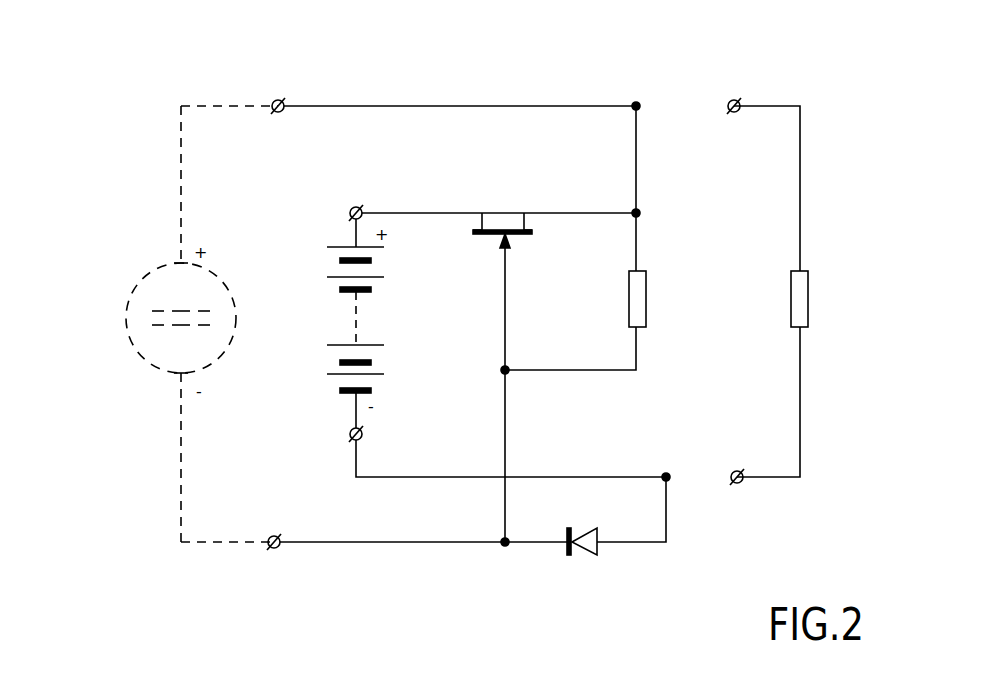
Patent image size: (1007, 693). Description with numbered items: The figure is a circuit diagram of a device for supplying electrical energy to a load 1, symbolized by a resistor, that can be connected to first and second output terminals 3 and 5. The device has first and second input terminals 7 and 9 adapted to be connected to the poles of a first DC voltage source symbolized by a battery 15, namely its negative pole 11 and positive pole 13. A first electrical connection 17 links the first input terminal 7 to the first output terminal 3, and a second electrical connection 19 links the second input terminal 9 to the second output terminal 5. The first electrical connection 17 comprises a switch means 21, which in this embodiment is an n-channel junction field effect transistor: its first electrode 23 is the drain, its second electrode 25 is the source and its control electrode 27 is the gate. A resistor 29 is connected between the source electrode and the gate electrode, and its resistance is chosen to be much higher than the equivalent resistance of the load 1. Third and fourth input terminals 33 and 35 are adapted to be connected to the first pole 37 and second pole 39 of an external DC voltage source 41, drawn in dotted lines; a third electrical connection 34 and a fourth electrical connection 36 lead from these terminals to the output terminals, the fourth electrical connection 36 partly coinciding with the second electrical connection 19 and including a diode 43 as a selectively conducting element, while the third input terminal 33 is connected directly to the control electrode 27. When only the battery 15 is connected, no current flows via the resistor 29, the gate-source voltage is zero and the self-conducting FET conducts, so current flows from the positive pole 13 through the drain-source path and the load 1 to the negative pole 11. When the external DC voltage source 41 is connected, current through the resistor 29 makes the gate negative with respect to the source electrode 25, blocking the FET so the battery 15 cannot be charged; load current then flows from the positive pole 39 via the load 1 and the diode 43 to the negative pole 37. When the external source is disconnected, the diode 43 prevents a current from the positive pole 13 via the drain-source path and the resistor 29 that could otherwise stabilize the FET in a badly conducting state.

The load 1 is at (808, 300).
The first output terminal 3 is at (735, 99).
The second output terminal 5 is at (738, 484).
The first input terminal 7 is at (349, 213).
The second input terminal 9 is at (350, 444).
The negative pole 11 is at (340, 391).
The positive pole 13 is at (327, 247).
The battery 15 is at (362, 318).
The first electrical connection 17 is at (420, 213).
The second electrical connection 19 is at (438, 477).
The switch means 21 is at (512, 199).
The first electrode 23 is at (473, 233).
The second electrode 25 is at (532, 233).
The control electrode 27 is at (506, 268).
The resistor 29 is at (646, 300).
The third input terminal 33 is at (276, 99).
The third electrical connection 34 is at (456, 104).
The fourth input terminal 35 is at (275, 548).
The fourth electrical connection 36 is at (382, 544).
The first pole 37 is at (180, 374).
The second pole 39 is at (178, 263).
The external DC voltage source 41 is at (126, 318).
The diode 43 is at (580, 556).